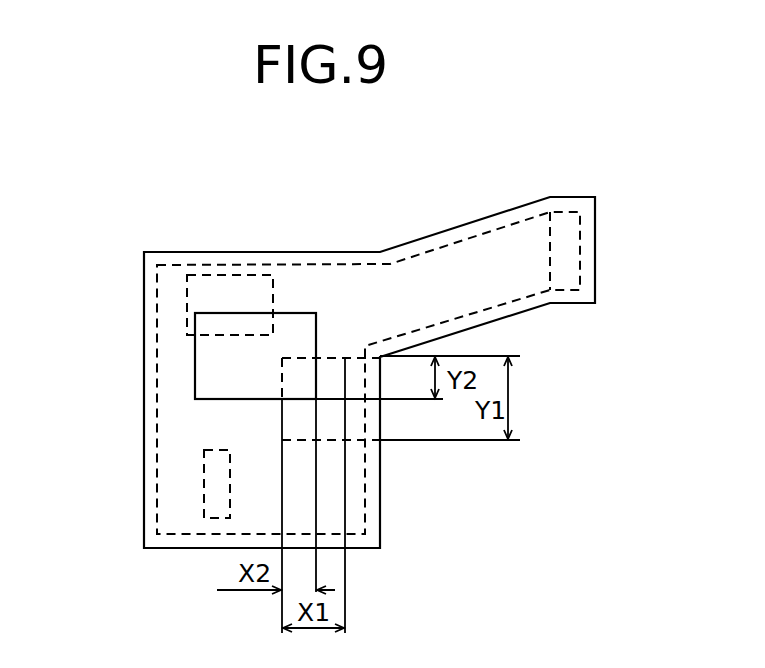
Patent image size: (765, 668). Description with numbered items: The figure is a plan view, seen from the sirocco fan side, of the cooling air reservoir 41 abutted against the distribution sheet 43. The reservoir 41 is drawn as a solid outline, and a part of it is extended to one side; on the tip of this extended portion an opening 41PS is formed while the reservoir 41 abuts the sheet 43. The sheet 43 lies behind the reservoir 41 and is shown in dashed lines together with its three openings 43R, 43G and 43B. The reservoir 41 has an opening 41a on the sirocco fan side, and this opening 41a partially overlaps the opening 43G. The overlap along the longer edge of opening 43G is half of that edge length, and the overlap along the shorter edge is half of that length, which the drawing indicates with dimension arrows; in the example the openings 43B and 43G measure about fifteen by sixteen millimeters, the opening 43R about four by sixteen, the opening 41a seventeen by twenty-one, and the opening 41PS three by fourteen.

The cooling air reservoir 41 is at (144, 281).
The opening 41a is at (299, 327).
The opening 41PS is at (563, 234).
The distribution sheet 43 is at (173, 378).
The opening 43B is at (210, 290).
The opening 43G is at (335, 352).
The opening 43R is at (204, 484).